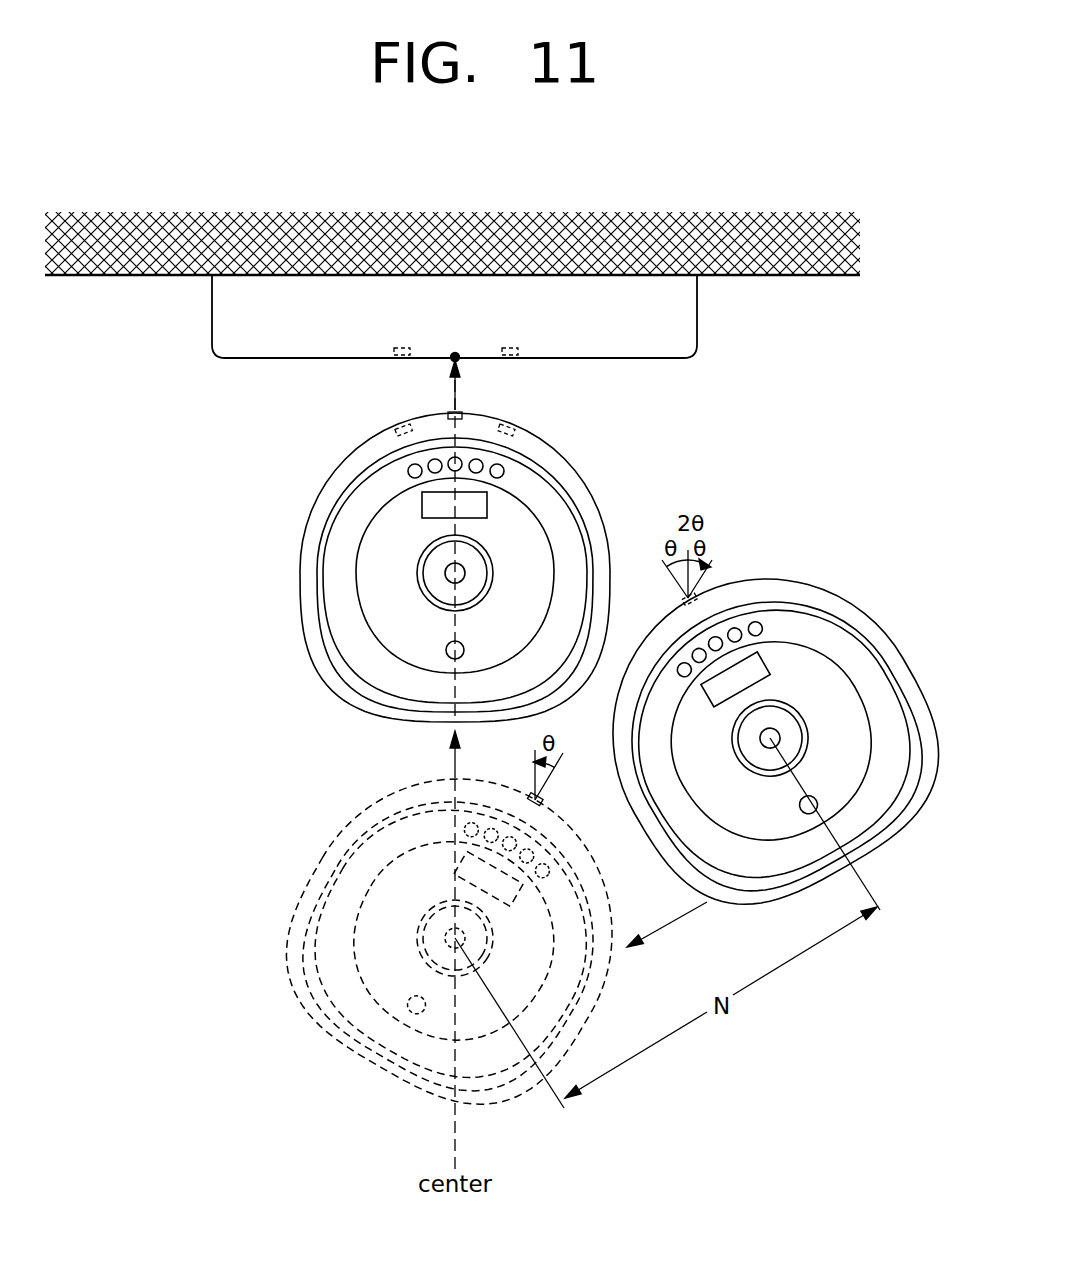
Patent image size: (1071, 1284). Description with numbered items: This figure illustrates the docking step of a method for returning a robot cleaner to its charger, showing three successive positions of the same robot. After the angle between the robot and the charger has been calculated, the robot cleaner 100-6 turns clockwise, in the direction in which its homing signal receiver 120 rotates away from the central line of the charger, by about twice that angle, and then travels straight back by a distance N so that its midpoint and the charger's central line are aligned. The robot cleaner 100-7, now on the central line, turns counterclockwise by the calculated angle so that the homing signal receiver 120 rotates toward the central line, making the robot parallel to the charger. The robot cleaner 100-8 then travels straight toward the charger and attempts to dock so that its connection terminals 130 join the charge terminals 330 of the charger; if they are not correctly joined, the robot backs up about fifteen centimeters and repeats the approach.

The charge terminals 330 is at (510, 352).
The connection terminals 130 is at (405, 424).
The homing signal receiver 120 is at (460, 413).
The robot cleaner 100-8 is at (301, 579).
The robot cleaner 100-7 is at (300, 905).
The robot cleaner 100-6 is at (829, 592).